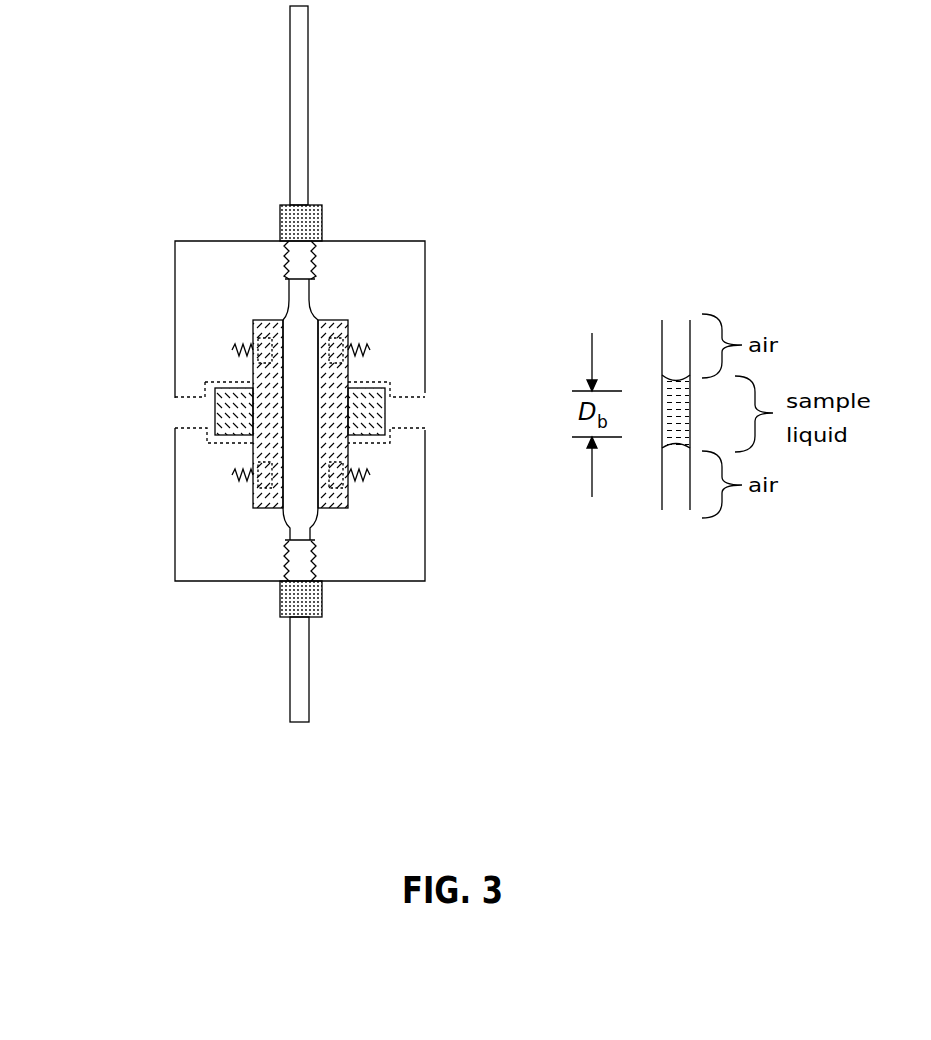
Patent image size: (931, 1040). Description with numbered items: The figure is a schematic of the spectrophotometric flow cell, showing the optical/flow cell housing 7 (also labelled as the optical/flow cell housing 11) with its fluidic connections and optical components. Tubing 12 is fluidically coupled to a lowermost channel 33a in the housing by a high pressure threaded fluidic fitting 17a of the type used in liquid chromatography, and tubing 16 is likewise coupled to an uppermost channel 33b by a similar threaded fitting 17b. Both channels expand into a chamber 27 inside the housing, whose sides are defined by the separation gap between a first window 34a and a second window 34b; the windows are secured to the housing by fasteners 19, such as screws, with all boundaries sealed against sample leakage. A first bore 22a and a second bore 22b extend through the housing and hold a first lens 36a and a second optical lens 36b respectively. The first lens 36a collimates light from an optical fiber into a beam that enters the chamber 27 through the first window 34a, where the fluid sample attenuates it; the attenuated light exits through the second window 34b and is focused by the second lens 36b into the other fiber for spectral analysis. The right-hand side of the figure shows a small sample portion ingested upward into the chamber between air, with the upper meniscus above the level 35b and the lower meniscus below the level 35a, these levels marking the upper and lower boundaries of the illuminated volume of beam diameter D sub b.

The optical/flow cell housing 11 is at (170, 205).
The optical/flow cell housing 7 is at (175, 298).
The tubing 16 is at (308, 100).
The tubing 12 is at (310, 655).
The high pressure threaded fluidic fitting 17a is at (280, 600).
The threaded fitting 17b is at (322, 221).
The lowermost channel 33a is at (298, 515).
The uppermost channel 33b is at (300, 302).
The first window 34a is at (270, 320).
The second window 34b is at (340, 510).
The chamber 27 is at (303, 377).
The fasteners 19 is at (370, 350).
The first lens 36a is at (215, 412).
The second optical lens 36b is at (385, 412).
The first bore 22a is at (165, 420).
The second bore 22b is at (436, 405).
The level 35a is at (615, 438).
The level 35b is at (610, 387).